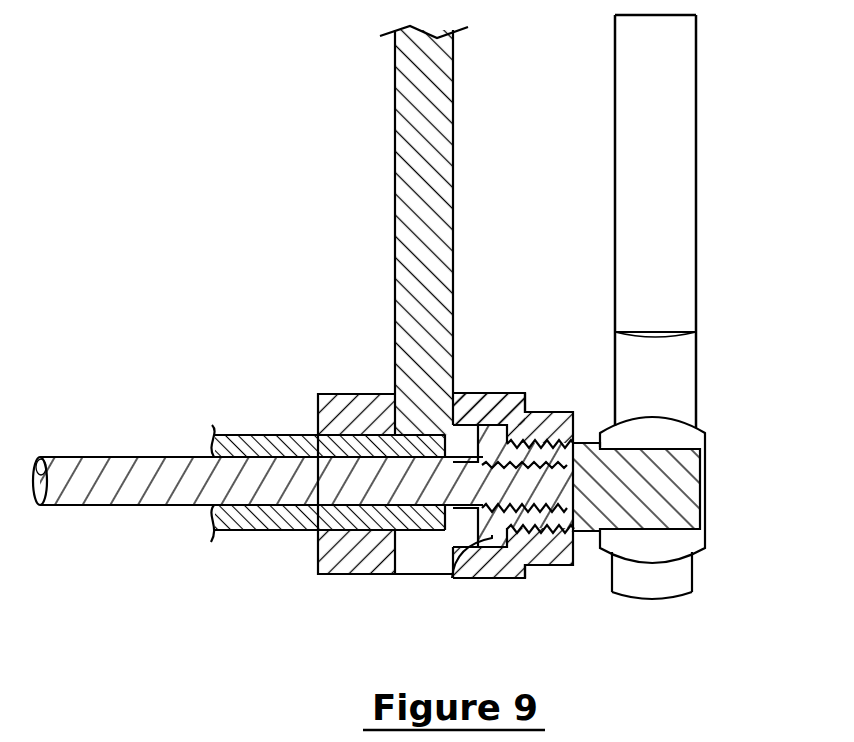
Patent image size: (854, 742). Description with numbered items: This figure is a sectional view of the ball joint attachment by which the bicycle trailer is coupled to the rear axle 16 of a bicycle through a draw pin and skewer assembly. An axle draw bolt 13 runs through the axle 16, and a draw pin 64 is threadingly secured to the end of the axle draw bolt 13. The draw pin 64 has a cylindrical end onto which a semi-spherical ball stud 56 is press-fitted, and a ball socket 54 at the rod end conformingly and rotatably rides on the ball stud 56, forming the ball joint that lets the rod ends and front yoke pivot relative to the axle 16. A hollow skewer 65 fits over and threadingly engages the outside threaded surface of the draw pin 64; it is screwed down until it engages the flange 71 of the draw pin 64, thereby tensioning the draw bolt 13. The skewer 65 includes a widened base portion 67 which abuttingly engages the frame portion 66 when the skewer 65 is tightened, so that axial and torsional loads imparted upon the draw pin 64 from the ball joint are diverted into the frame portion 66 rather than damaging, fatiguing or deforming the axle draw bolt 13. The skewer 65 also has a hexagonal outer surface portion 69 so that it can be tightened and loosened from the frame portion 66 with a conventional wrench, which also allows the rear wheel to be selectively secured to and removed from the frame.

The axle draw bolt 13 is at (107, 506).
The rear axle 16 is at (273, 531).
The frame portion 66 is at (395, 270).
The widened base portion 67 is at (453, 397).
The hollow skewer 65 is at (505, 572).
The flange 71 is at (452, 578).
The hexagonal outer surface portion 69 is at (548, 565).
The draw pin 64 is at (652, 507).
The ball stud 56 is at (700, 430).
The ball socket 54 is at (708, 533).